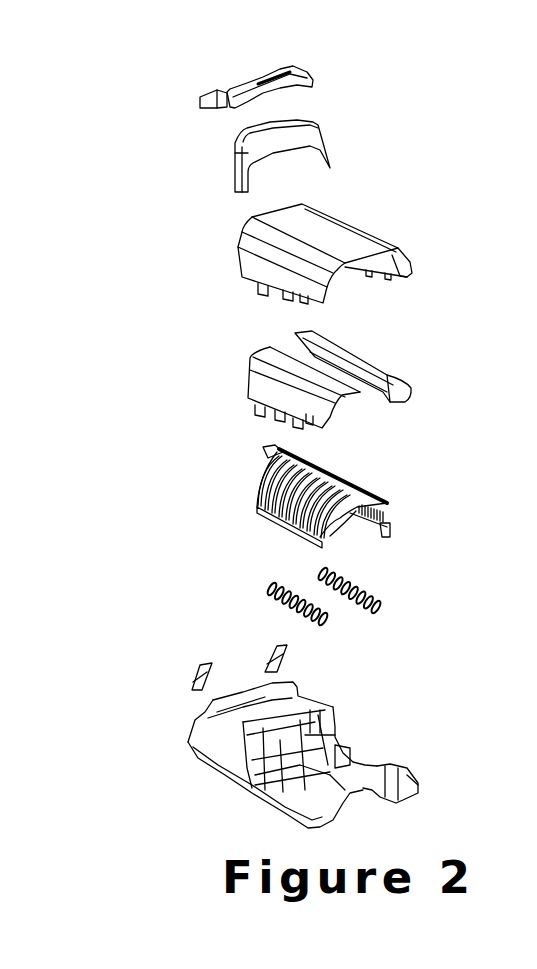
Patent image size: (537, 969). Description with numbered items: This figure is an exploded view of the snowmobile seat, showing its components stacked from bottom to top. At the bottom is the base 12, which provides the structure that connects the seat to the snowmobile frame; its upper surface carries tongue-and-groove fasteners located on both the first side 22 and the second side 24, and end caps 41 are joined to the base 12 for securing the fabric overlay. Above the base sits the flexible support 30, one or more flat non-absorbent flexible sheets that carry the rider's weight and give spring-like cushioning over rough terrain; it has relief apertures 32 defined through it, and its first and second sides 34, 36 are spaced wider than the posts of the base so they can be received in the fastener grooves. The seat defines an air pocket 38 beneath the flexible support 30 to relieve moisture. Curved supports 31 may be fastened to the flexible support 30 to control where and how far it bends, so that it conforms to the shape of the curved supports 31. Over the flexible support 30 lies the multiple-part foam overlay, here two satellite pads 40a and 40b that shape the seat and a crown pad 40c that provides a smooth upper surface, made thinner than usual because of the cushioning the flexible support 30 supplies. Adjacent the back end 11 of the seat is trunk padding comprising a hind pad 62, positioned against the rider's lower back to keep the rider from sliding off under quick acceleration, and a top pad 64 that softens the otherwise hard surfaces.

The back end 11 is at (120, 708).
The base 12 is at (331, 760).
The first side 22 is at (367, 773).
The second side 24 is at (262, 800).
The flexible support 30 is at (346, 516).
The curved supports 31 is at (375, 605).
The relief apertures 32 is at (253, 497).
The first side of flexible support 34 is at (390, 537).
The second side of flexible support 36 is at (282, 527).
The air pocket 38 is at (352, 530).
The satellite pad 40a is at (276, 387).
The satellite pad 40b is at (398, 377).
The crown pad 40c is at (330, 228).
The end caps 41 is at (193, 675).
The hind pad 62 is at (312, 133).
The top pad 64 is at (308, 77).